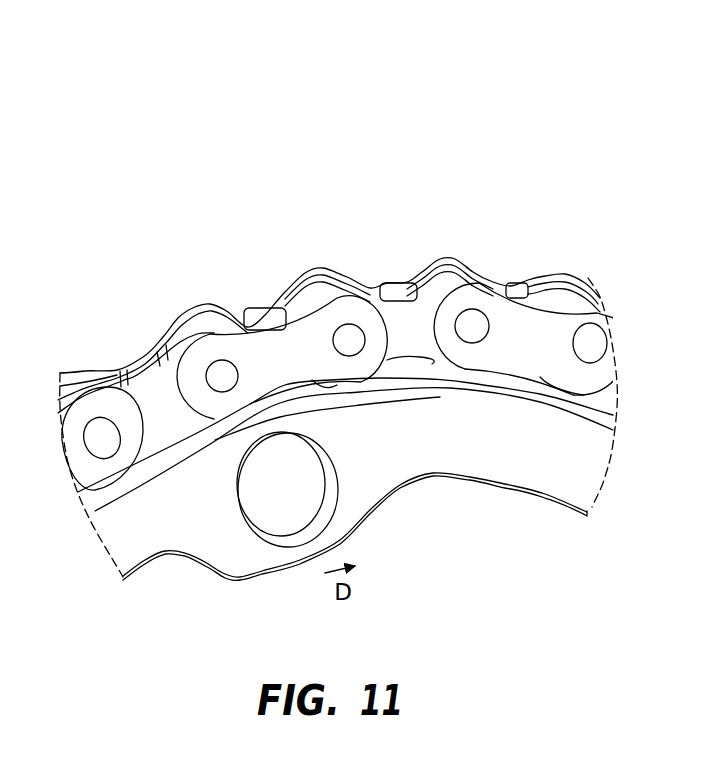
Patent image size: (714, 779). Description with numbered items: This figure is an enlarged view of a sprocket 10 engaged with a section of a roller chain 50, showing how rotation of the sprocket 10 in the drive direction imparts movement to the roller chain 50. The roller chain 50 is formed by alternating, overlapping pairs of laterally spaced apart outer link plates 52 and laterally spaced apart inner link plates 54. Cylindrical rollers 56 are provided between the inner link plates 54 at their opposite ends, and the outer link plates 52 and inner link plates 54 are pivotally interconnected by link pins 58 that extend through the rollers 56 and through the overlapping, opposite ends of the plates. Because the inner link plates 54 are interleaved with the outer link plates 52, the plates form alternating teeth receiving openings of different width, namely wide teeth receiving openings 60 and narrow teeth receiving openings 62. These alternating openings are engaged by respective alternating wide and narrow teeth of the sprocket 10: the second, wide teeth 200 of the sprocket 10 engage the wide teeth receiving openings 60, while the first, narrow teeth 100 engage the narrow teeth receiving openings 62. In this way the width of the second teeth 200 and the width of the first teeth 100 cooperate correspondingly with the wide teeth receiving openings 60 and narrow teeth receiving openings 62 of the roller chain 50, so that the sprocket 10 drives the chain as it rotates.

The sprocket 10 is at (186, 78).
The roller chain 50 is at (170, 203).
The outer link plates 52 is at (233, 315).
The inner link plates 54 is at (108, 378).
The rollers 56 is at (187, 331).
The link pins 58 is at (223, 380).
The wide teeth receiving openings 60 is at (257, 277).
The narrow teeth receiving openings 62 is at (128, 335).
The first teeth 100 is at (387, 270).
The second teeth 200 is at (515, 271).